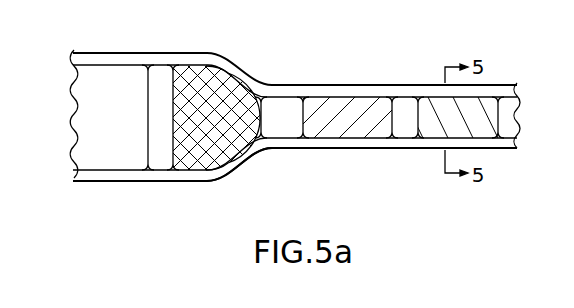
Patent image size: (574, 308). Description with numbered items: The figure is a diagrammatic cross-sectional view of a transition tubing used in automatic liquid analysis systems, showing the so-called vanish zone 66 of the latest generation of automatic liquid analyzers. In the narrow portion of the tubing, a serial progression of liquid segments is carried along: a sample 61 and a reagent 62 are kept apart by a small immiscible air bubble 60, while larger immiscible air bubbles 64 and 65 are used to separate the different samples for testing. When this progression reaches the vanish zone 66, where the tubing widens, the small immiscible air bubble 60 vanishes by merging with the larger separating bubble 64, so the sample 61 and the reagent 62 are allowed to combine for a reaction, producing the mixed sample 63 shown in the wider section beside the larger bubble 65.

The small immiscible air bubble 60 is at (408, 107).
The sample 61 is at (355, 102).
The reagent 62 is at (487, 102).
The mixed sample 63 is at (217, 85).
The larger immiscible air bubble 64 is at (282, 105).
The larger immiscible air bubble 65 is at (160, 75).
The vanish zone 66 is at (252, 160).